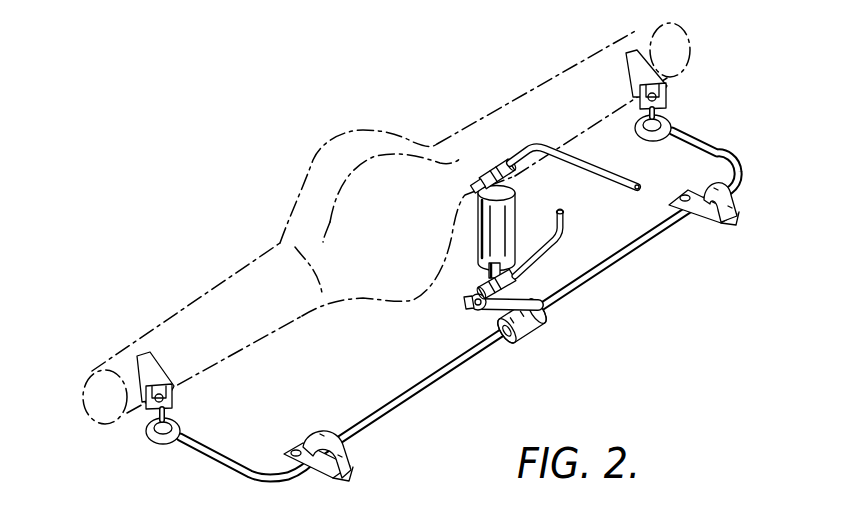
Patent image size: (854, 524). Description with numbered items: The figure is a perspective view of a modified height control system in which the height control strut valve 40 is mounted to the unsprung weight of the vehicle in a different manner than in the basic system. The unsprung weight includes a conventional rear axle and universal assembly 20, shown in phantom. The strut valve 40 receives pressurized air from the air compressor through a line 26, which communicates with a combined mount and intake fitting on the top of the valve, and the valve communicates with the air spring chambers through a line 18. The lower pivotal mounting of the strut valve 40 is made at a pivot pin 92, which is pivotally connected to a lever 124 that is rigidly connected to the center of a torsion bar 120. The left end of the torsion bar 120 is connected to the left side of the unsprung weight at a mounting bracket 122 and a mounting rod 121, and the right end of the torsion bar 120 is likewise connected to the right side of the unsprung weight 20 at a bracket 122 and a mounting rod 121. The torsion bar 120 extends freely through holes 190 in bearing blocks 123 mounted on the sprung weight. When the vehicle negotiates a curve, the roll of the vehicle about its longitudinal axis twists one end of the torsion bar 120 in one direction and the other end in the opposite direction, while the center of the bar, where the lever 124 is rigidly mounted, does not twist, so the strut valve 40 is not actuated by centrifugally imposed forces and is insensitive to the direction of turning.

The rear axle and universal assembly 20 is at (285, 193).
The height control strut valve 40 is at (455, 218).
The line 26 is at (612, 182).
The line 18 is at (553, 298).
The pivot pin 92 is at (468, 308).
The lever 124 is at (538, 328).
The torsion bar 120 is at (390, 398).
The mounting rod 121 is at (150, 418).
The mounting bracket 122 is at (160, 352).
The bearing block 123 is at (322, 479).
The hole 190 is at (300, 481).